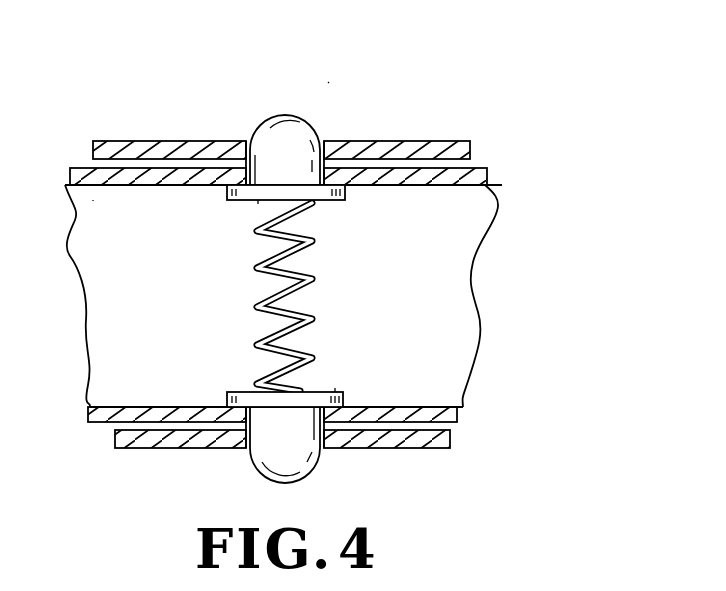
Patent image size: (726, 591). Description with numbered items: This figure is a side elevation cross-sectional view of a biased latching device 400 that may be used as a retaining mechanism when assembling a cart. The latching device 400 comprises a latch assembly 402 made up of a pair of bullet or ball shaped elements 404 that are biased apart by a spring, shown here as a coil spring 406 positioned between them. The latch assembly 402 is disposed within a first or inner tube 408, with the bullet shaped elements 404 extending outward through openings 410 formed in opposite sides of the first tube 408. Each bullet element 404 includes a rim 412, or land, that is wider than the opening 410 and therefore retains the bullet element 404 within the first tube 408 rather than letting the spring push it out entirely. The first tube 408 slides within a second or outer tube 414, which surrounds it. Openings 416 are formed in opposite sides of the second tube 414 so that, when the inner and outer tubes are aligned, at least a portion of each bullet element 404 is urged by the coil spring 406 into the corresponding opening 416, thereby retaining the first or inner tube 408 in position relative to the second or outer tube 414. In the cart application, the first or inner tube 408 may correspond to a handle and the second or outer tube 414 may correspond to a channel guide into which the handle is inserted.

The latching device 400 is at (328, 82).
The latch assembly 402 is at (208, 296).
The bullet shaped elements 404 is at (303, 127).
The coil spring 406 is at (315, 283).
The first or inner tube 408 is at (497, 208).
The openings 410 is at (258, 200).
The rim 412 is at (345, 198).
The second or outer tube 414 is at (170, 141).
The openings 416 is at (248, 141).